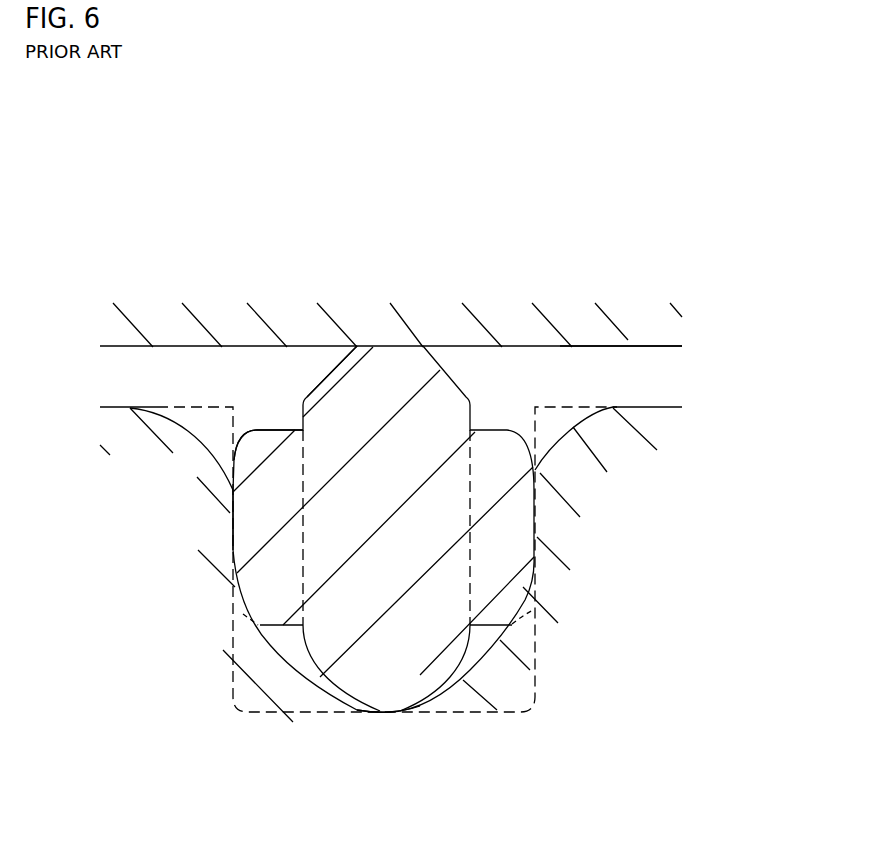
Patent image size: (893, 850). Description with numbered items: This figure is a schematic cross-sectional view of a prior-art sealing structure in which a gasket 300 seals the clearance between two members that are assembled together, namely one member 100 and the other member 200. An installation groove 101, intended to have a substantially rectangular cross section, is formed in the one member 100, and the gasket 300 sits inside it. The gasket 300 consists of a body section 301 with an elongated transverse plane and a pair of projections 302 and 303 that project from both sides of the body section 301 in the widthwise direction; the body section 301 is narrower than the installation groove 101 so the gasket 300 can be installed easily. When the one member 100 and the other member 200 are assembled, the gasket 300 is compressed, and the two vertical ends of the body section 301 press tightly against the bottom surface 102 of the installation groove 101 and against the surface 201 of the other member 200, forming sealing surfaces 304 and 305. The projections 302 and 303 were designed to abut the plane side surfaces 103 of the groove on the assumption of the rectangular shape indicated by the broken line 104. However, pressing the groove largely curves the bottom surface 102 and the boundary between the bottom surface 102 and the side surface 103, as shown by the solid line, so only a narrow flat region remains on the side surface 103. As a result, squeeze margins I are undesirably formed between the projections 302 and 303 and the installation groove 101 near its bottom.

The one member 100 is at (120, 393).
The installation groove 101 is at (295, 637).
The bottom surface 102 is at (463, 765).
The side surface 103 is at (235, 543).
The broken line 104 is at (180, 407).
The other member 200 is at (668, 365).
The surface 201 is at (628, 345).
The gasket 300 is at (477, 377).
The body section 301 is at (320, 383).
The projection 302 is at (253, 430).
The projection 303 is at (503, 427).
The sealing surface 304 is at (420, 675).
The sealing surface 305 is at (390, 346).
The squeeze margin I is at (240, 616).